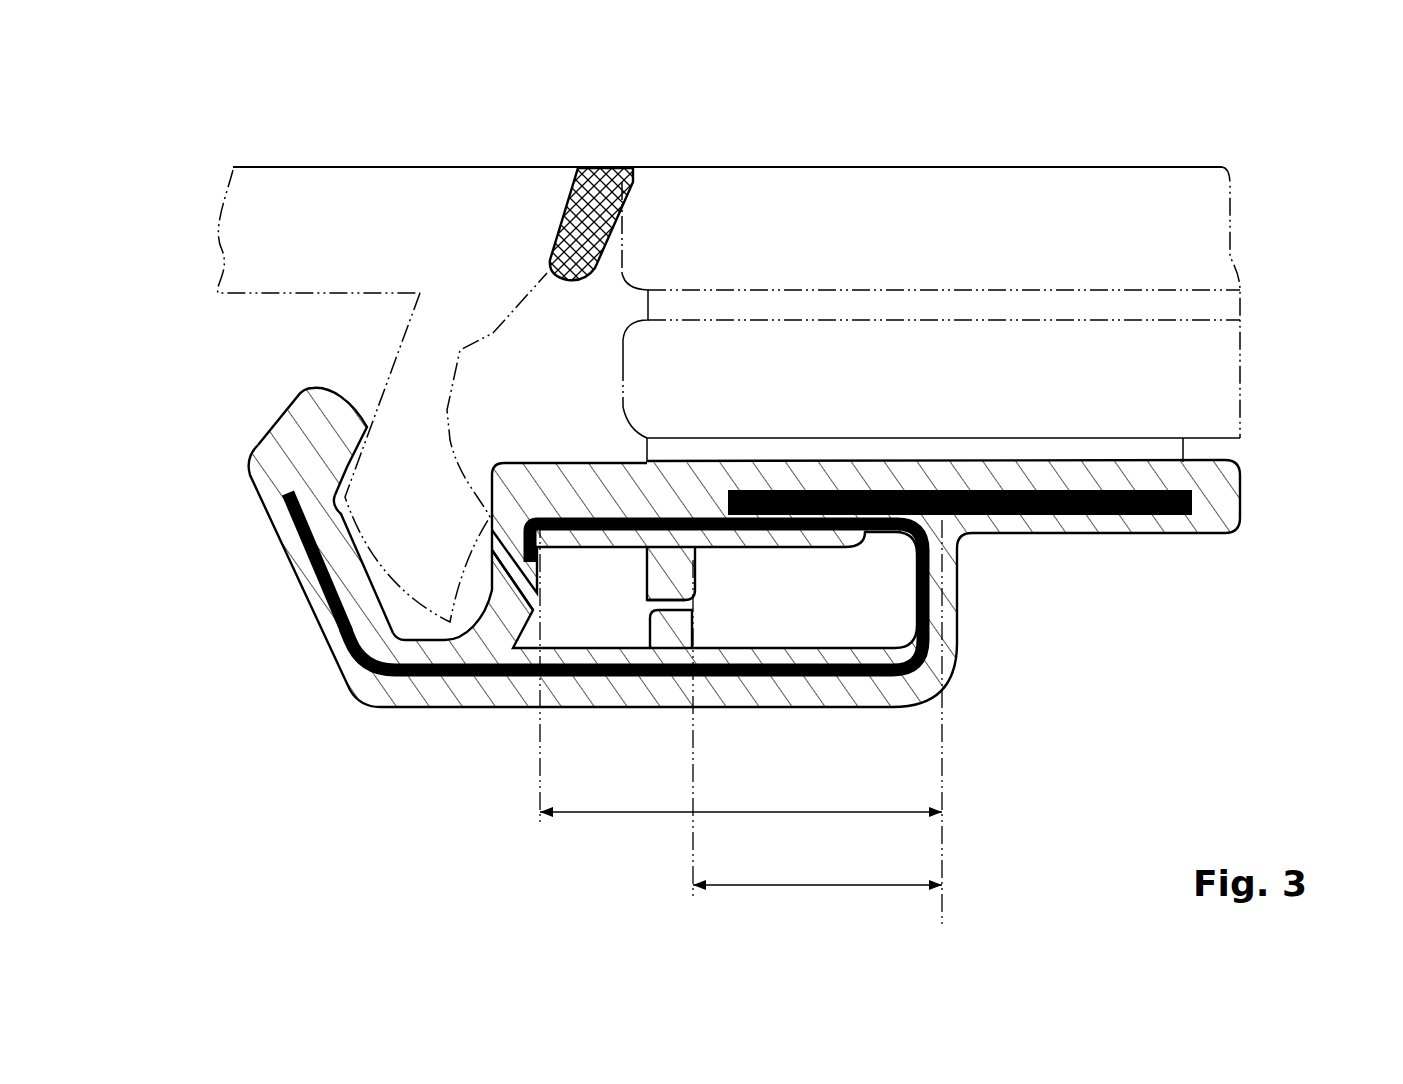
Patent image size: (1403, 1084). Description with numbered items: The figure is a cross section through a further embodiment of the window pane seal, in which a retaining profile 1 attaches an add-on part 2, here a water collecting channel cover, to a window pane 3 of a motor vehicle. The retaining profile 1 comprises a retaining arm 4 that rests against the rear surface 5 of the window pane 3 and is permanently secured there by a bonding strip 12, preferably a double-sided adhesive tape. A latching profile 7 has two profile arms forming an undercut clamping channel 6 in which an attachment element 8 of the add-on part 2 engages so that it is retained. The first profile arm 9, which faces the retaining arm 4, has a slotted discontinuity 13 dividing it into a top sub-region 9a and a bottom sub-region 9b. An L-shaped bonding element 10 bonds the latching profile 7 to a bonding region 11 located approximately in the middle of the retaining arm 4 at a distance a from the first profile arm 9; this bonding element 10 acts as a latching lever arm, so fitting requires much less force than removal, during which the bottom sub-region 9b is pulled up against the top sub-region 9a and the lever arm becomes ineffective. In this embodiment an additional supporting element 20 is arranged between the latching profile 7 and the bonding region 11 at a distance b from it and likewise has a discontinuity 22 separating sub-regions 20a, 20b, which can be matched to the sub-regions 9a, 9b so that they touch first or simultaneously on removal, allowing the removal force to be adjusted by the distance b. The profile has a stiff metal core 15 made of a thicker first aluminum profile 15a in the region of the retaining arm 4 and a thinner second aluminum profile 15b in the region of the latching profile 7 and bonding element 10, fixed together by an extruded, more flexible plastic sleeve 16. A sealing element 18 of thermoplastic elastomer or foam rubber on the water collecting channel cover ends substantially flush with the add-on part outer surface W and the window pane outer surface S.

The retaining profile 1 is at (312, 762).
The add-on part 2 is at (310, 233).
The window pane 3 is at (810, 398).
The retaining arm 4 is at (1100, 563).
The surface of the window pane 5 is at (1227, 443).
The undercut clamping channel 6 is at (403, 603).
The latching profile 7 is at (250, 572).
The attachment element 8 is at (405, 490).
The first profile arm 9 is at (513, 487).
The top sub-region 9a is at (530, 568).
The bottom sub-region 9b is at (505, 583).
The bonding element 10 is at (793, 728).
The bonding region 11 is at (943, 527).
The bonding strip 12 is at (1058, 448).
The discontinuity 13 is at (515, 575).
The core 15 is at (930, 483).
The first aluminum profile 15a is at (1193, 498).
The second aluminum profile 15b is at (288, 490).
The plastic sleeve 16 is at (317, 413).
The sealing element 18 is at (598, 187).
The supporting element 20 is at (713, 587).
The sub-region of the supporting element 20a is at (668, 580).
The sub-region of the supporting element 20b is at (672, 623).
The discontinuity of the supporting element 22 is at (693, 603).
The add-on part outer surface W is at (447, 163).
The window pane outer surface S is at (1137, 163).
The distance a is at (741, 722).
The distance b is at (817, 730).